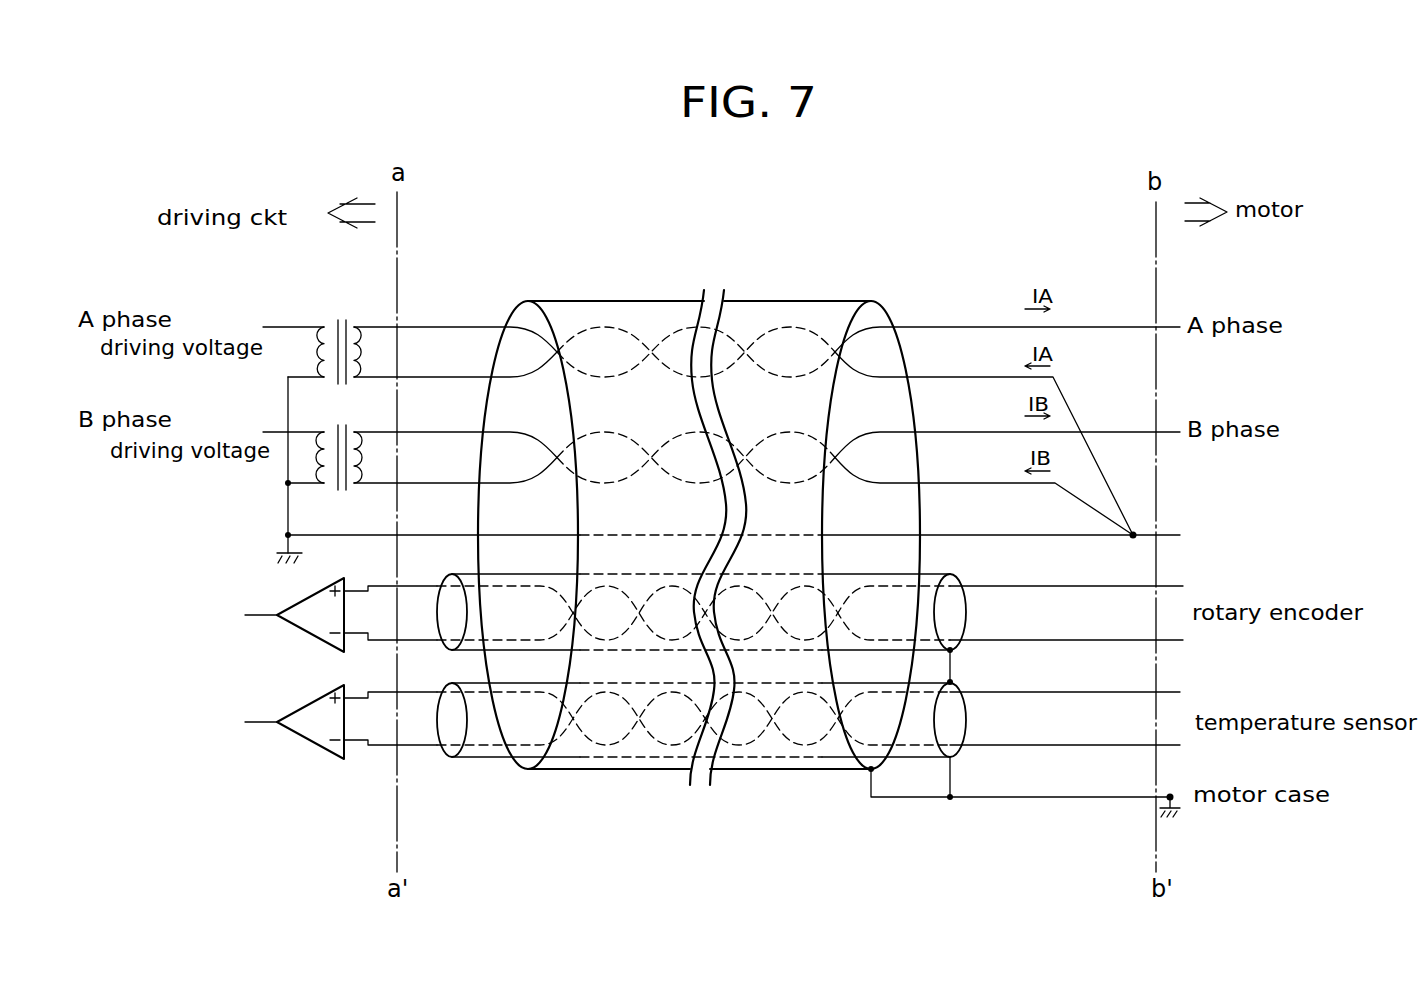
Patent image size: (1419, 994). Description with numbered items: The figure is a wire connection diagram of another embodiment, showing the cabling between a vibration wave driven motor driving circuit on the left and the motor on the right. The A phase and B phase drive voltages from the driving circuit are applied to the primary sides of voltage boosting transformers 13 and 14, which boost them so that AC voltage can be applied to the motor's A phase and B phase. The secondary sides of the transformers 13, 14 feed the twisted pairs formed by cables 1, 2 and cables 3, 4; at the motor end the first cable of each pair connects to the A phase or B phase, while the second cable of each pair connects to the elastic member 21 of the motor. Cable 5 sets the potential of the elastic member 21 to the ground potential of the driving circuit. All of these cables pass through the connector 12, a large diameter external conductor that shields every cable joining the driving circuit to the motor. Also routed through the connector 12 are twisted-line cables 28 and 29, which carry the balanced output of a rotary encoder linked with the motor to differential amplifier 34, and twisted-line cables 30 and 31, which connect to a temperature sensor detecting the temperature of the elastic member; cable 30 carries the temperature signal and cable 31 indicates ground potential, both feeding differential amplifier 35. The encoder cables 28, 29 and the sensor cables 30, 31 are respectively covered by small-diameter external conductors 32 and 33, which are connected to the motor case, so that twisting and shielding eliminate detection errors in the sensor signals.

The cable 1 is at (767, 336).
The cable 2 is at (743, 431).
The cable 3 is at (767, 442).
The cable 4 is at (743, 483).
The cable 5 is at (734, 519).
The connector 12 is at (820, 301).
The voltage boosting transformer 13 is at (338, 321).
The voltage boosting transformer 14 is at (344, 428).
The elastic member 21 is at (1270, 534).
The cable 28 is at (763, 600).
The cable 29 is at (763, 616).
The cable 30 is at (762, 705).
The cable 31 is at (762, 721).
The small-diameter external conductor 32 is at (934, 576).
The small-diameter external conductor 33 is at (964, 738).
The differential amplifier 34 is at (312, 594).
The differential amplifier 35 is at (312, 701).